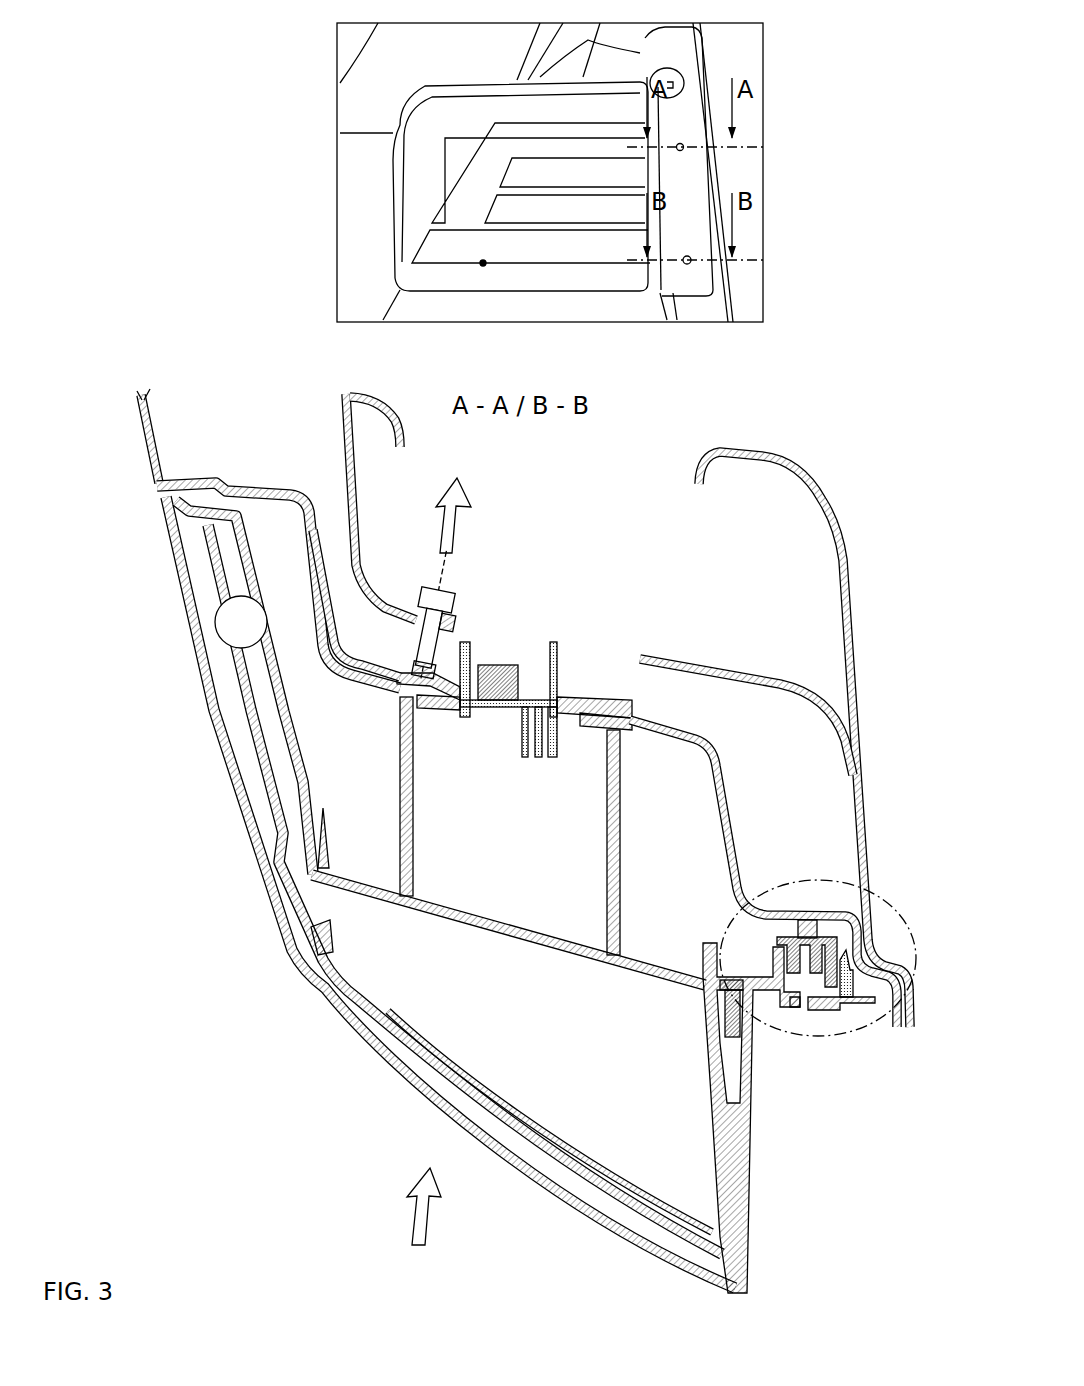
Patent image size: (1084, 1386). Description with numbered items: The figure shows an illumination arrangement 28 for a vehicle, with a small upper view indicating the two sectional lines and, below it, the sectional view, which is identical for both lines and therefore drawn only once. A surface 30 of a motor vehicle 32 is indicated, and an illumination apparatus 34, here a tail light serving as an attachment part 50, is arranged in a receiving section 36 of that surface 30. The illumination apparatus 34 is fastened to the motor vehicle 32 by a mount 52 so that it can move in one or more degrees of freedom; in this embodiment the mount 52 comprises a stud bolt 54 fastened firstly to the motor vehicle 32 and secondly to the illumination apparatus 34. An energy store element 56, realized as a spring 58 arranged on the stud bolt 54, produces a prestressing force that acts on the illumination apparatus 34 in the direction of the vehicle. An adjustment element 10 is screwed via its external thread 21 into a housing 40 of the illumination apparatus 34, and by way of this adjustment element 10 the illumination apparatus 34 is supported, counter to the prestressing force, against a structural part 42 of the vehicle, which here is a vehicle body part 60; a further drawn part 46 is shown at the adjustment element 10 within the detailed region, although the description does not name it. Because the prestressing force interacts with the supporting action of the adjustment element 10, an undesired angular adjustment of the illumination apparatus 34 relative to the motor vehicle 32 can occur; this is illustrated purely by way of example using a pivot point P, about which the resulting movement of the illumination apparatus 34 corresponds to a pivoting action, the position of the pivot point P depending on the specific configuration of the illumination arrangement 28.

The adjustment element 10 is at (848, 927).
The external thread 21 is at (776, 942).
The illumination arrangement 28 is at (310, 1111).
The surface 30 is at (234, 370).
The motor vehicle 32 is at (145, 481).
The illumination apparatus 34 is at (310, 1009).
The receiving section 36 is at (291, 549).
The housing 40 is at (772, 955).
The structural part 42 is at (801, 739).
The latching element 46 is at (800, 917).
The attachment part 50 is at (450, 690).
The mount 52 is at (443, 573).
The stud bolt 54 is at (465, 546).
The energy store element 56 is at (404, 582).
The spring 58 is at (413, 607).
The vehicle body part 60 is at (717, 773).
The pivot point P is at (235, 625).